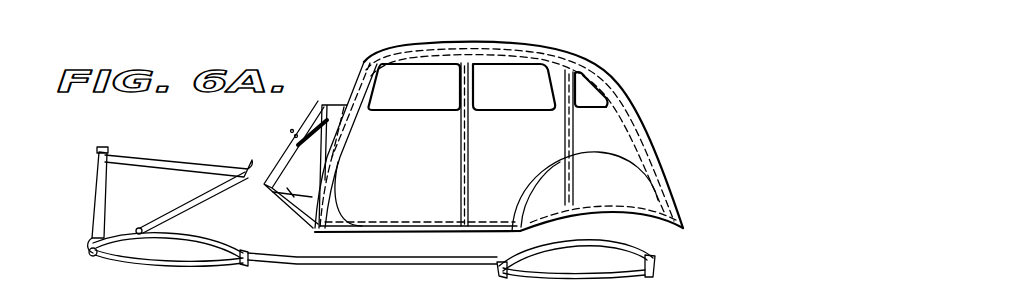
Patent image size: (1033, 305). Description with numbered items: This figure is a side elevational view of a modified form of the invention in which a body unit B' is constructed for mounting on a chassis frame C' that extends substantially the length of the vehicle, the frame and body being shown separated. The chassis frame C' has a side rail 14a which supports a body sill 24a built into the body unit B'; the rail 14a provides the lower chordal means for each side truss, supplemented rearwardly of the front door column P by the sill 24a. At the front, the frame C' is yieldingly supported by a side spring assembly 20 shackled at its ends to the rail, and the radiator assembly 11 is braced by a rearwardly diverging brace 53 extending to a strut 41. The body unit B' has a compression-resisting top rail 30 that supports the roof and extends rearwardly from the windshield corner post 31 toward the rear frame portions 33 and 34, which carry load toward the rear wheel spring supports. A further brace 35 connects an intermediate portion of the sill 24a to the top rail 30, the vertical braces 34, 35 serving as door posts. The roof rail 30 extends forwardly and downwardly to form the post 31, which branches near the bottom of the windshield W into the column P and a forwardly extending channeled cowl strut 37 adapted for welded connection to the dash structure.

The radiator assembly 11 is at (94, 191).
The chassis frame rail 14a is at (425, 264).
The side spring assembly 20 is at (162, 263).
The body sill 24a is at (366, 227).
The top rail 30 is at (500, 50).
The windshield corner post 31 is at (372, 91).
The frame portion 33 is at (628, 124).
The vertical brace 34 is at (570, 122).
The brace 35 is at (462, 153).
The cowl strut 37 is at (311, 112).
The strut 41 is at (197, 190).
The brace 53 is at (160, 164).
The body unit B' is at (352, 122).
The chassis frame C' is at (168, 239).
The front door column P is at (334, 158).
The windshield W is at (360, 90).